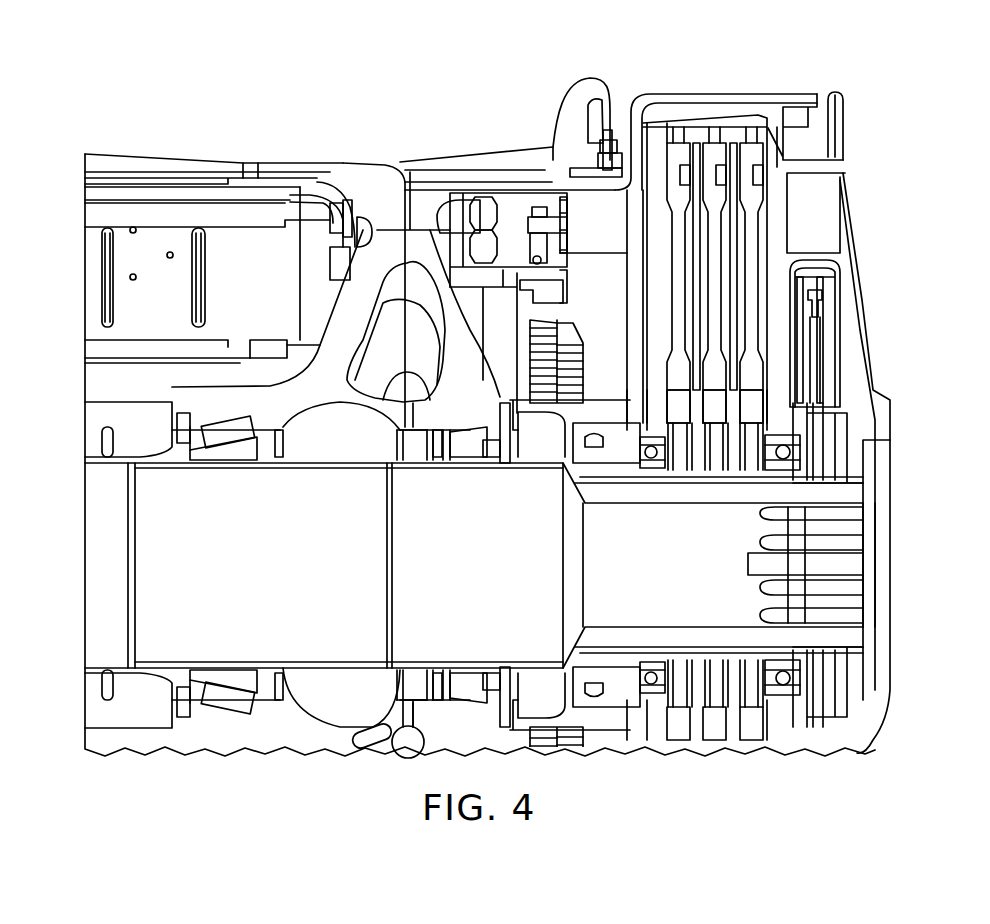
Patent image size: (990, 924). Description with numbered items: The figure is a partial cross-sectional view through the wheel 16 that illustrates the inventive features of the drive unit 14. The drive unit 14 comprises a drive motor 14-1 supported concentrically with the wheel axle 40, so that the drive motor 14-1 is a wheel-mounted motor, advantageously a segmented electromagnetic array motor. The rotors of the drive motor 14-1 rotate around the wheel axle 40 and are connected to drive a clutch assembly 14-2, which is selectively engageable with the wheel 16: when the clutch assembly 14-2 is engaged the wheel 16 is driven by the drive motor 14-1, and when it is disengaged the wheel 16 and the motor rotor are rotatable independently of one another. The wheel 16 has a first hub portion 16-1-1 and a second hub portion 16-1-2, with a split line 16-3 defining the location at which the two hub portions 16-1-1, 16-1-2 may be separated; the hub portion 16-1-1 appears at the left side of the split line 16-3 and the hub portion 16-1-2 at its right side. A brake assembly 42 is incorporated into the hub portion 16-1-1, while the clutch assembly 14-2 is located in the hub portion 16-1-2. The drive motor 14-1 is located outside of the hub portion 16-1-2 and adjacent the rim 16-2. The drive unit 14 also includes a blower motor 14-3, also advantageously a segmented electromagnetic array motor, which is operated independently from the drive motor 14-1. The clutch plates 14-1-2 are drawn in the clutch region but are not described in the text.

The drive unit 14 is at (735, 72).
The drive motor 14-1 is at (742, 237).
The clutch plates 14-1-2 is at (753, 358).
The clutch assembly 14-2 is at (588, 207).
The blower motor 14-3 is at (817, 340).
The wheel 16 is at (290, 120).
The first hub portion 16-1-1 is at (237, 163).
The second hub portion 16-1-2 is at (507, 152).
The rim 16-2 is at (585, 78).
The split line 16-3 is at (388, 168).
The wheel axle 40 is at (720, 572).
The brake assembly 42 is at (153, 243).